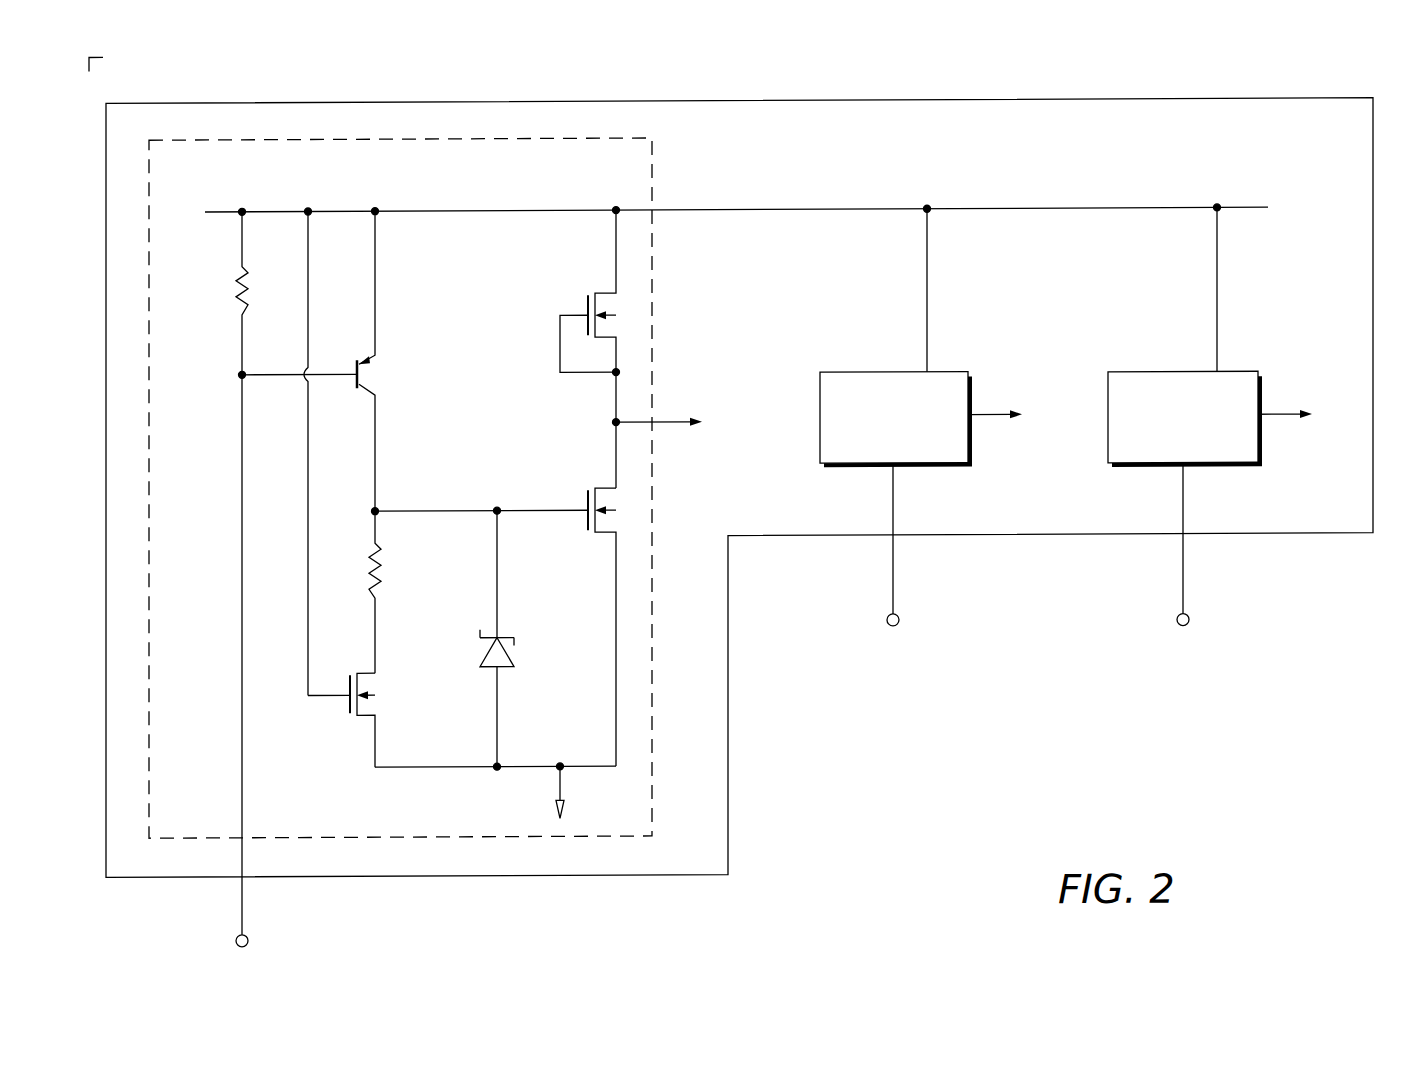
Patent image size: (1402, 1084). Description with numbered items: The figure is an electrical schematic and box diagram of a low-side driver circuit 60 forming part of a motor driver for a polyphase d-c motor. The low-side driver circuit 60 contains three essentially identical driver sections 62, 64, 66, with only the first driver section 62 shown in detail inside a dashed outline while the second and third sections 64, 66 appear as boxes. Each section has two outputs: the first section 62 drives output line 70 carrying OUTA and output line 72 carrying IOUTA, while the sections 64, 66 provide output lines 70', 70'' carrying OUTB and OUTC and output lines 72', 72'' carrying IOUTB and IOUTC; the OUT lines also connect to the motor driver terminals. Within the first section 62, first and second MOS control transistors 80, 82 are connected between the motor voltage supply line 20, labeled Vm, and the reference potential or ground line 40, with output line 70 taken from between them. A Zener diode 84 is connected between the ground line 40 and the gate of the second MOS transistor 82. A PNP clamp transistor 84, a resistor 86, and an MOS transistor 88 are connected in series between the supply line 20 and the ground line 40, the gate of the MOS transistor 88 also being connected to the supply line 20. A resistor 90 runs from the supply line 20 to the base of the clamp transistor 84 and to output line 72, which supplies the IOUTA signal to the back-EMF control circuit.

The low-side driver circuit 60 is at (852, 103).
The first driver section 62 is at (652, 162).
The motor voltage supply line 20 is at (752, 212).
The resistor 90 is at (238, 275).
The Zener diode / PNP clamp transistor 84 is at (357, 389).
The first MOS control transistor 80 is at (604, 294).
The second MOS control transistor 82 is at (604, 489).
The resistor 86 is at (370, 560).
The MOS transistor 88 is at (366, 673).
The output line OUTA 70 is at (695, 429).
The output line IOUTA 72 is at (280, 670).
The ground line 40 is at (403, 768).
The second driver section 64 is at (852, 375).
The third driver section 66 is at (1142, 376).
The output line OUTB 70' is at (1016, 416).
The output line OUTC 70'' is at (1306, 416).
The output line IOUTB 72' is at (935, 554).
The output line IOUTC 72'' is at (1225, 554).